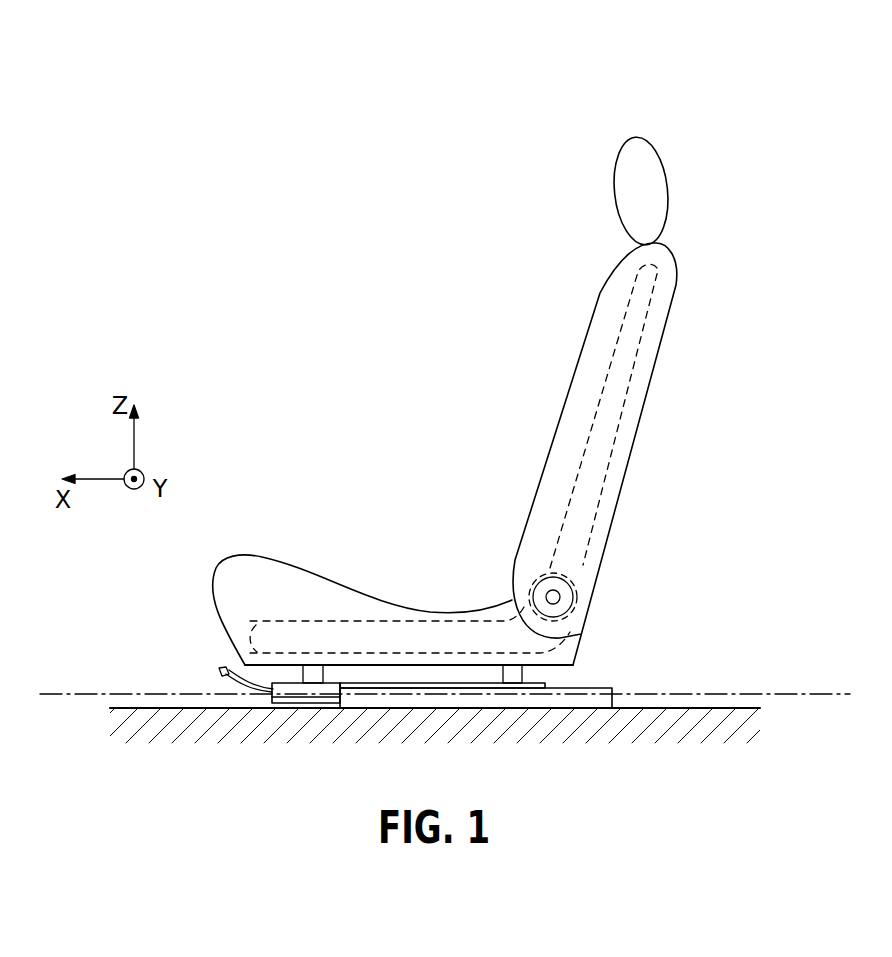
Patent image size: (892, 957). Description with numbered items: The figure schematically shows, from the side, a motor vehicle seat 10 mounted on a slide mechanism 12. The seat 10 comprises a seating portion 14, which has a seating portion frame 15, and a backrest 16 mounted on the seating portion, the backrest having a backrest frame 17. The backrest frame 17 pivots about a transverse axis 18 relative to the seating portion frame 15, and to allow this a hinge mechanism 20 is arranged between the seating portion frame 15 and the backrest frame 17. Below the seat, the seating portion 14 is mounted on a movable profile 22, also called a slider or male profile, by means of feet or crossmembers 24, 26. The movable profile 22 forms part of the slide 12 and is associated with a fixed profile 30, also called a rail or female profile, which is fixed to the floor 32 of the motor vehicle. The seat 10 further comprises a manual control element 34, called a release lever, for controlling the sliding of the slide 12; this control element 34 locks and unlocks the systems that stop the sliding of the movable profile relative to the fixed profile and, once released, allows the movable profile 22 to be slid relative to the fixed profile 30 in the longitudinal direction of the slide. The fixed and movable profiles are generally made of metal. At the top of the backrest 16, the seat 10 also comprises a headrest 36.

The motor vehicle seat 10 is at (404, 395).
The slide mechanism 12 is at (166, 606).
The seating portion 14 is at (233, 590).
The seating portion frame 15 is at (406, 604).
The backrest 16 is at (590, 375).
The backrest frame 17 is at (642, 350).
The transverse axis 18 is at (556, 596).
The hinge mechanism 20 is at (566, 584).
The movable profile 22 is at (290, 688).
The foot or crossmember 24 is at (315, 673).
The foot or crossmember 26 is at (513, 678).
The fixed profile 30 is at (598, 702).
The floor 32 is at (713, 710).
The manual control element 34 is at (221, 671).
The headrest 36 is at (672, 140).